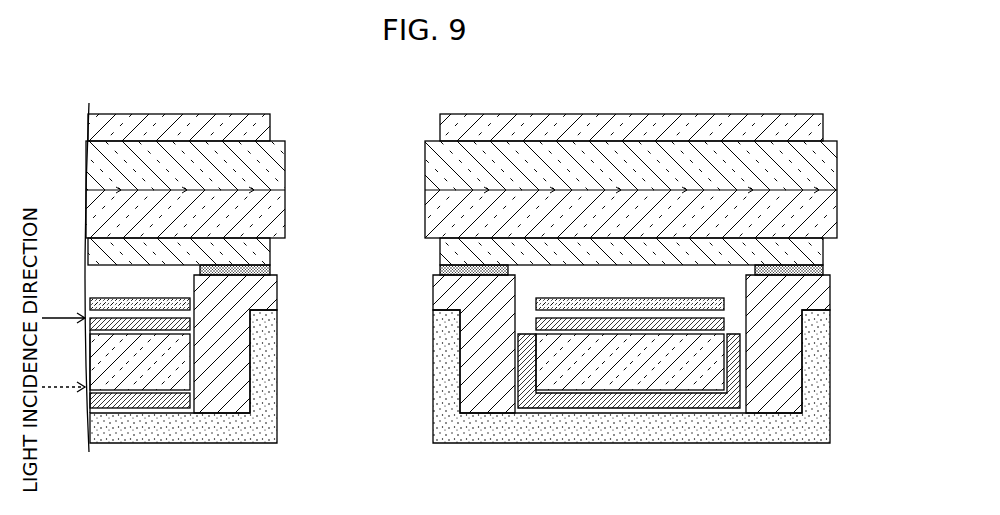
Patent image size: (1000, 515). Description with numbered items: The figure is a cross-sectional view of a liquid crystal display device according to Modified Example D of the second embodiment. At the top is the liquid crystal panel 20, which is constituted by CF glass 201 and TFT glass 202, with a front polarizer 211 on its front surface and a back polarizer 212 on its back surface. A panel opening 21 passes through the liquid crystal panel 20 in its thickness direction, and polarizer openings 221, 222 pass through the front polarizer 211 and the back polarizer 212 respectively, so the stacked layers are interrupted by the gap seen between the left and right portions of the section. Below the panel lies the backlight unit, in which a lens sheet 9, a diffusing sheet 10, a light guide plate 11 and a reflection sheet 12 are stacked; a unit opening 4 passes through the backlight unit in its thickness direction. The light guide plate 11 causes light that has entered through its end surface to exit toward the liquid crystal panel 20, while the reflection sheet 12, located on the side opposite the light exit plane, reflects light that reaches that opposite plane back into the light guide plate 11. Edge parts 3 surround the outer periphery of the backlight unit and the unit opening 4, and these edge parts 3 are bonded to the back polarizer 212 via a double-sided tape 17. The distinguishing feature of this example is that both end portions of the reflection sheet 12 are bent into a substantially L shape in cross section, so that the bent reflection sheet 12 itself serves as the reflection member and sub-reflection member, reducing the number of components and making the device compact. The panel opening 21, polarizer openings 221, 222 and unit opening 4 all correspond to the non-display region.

The edge part 3 is at (485, 392).
The unit opening 4 is at (355, 420).
The lens sheet 9 is at (724, 300).
The diffusing sheet 10 is at (724, 323).
The light guide plate 11 is at (705, 362).
The reflection sheet 12 is at (730, 402).
The double-sided tape 17 is at (823, 271).
The liquid crystal panel 20 is at (895, 152).
The CF glass 201 is at (818, 169).
The TFT glass 202 is at (818, 214).
The front polarizer 211 is at (823, 127).
The back polarizer 212 is at (823, 250).
The panel opening 21 is at (330, 178).
The polarizer opening 221 is at (356, 122).
The polarizer opening 222 is at (355, 253).